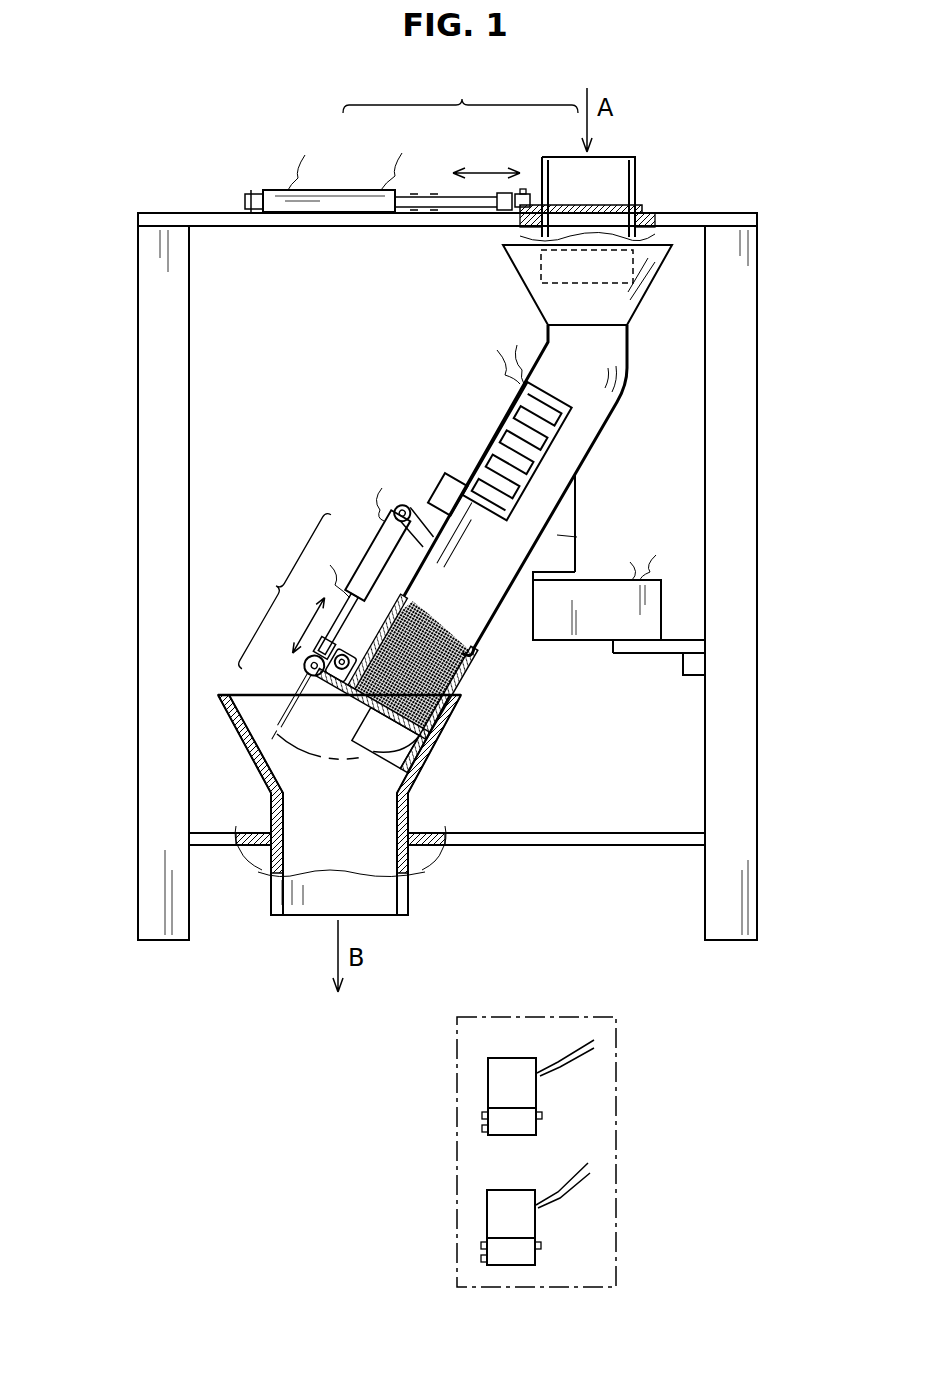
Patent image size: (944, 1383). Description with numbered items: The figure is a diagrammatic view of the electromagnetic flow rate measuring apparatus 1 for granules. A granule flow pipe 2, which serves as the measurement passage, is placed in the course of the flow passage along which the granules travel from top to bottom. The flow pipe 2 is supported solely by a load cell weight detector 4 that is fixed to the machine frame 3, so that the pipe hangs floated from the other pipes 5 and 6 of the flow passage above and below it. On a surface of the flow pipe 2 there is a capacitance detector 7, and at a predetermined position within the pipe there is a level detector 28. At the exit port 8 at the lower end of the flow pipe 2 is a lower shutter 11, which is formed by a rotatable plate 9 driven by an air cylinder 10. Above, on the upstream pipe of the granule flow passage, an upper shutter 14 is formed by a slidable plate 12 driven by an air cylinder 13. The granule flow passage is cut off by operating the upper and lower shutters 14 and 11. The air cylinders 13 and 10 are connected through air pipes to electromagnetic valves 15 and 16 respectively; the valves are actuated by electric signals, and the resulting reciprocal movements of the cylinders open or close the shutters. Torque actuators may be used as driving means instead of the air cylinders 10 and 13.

The electromagnetic flow rate measuring apparatus 1 is at (768, 151).
The granule flow pipe 2 is at (478, 660).
The machine frame 3 is at (744, 540).
The load cell weight detector 4 is at (594, 625).
The pipe 5 is at (636, 178).
The pipe 6 is at (388, 898).
The capacitance detector 7 is at (485, 436).
The exit port 8 is at (327, 771).
The rotatable plate 9 is at (312, 690).
The air cylinder 10 is at (369, 555).
The lower shutter 11 is at (299, 599).
The slidable plate 12 is at (567, 207).
The air cylinder 13 is at (358, 200).
The upper shutter 14 is at (460, 126).
The electromagnetic valve 15 is at (526, 1088).
The electromagnetic valve 16 is at (526, 1220).
The level detector 28 is at (430, 490).